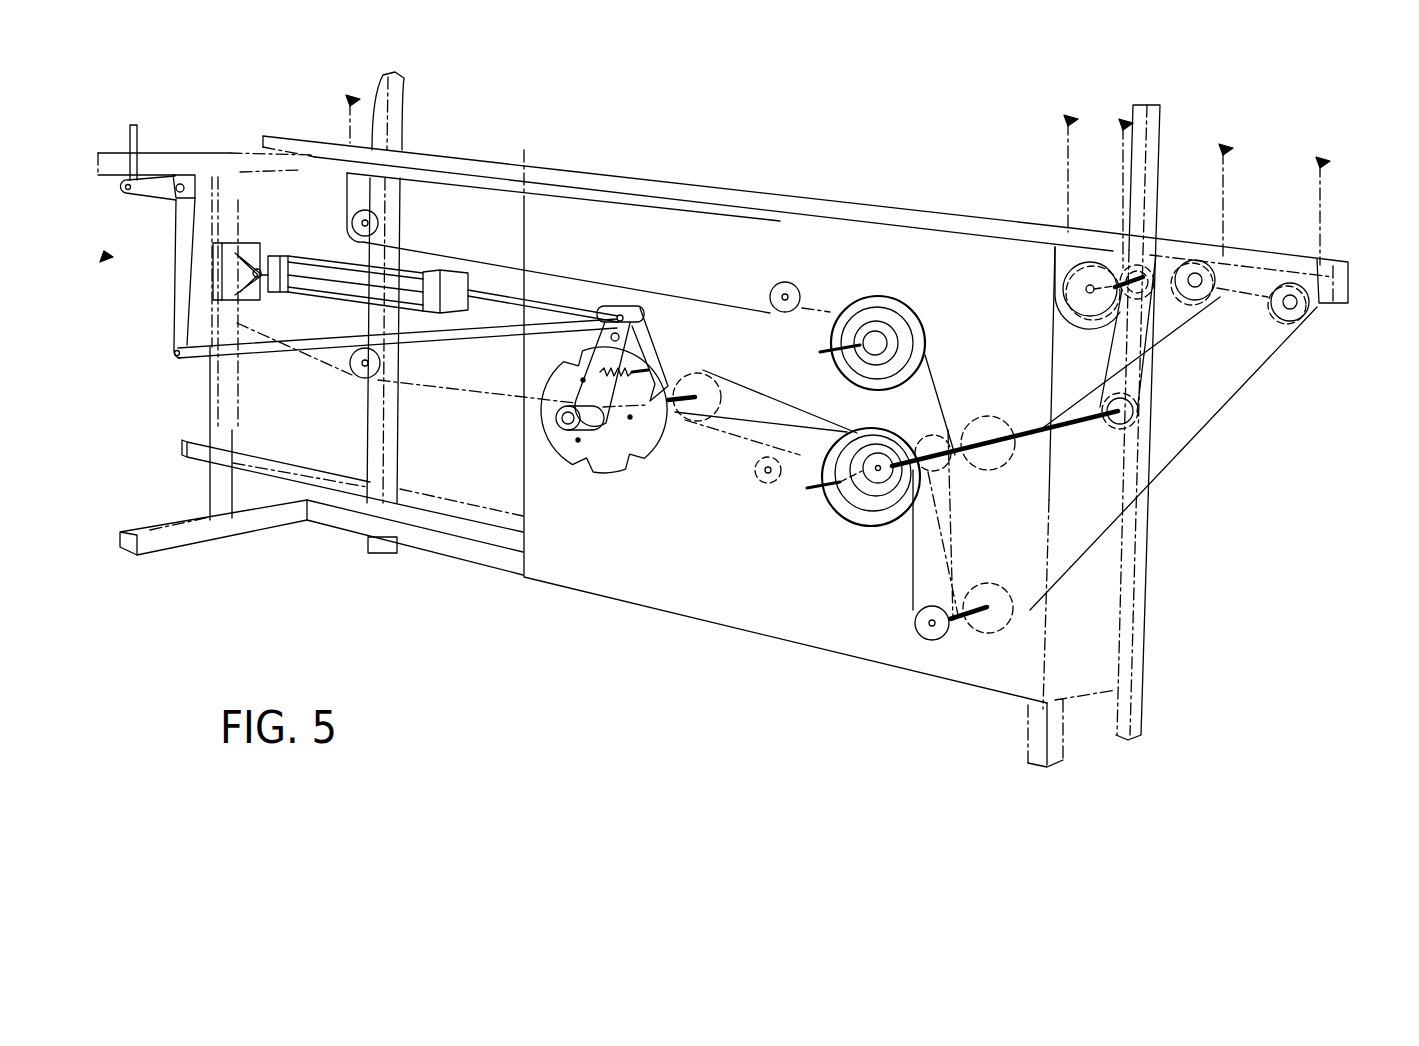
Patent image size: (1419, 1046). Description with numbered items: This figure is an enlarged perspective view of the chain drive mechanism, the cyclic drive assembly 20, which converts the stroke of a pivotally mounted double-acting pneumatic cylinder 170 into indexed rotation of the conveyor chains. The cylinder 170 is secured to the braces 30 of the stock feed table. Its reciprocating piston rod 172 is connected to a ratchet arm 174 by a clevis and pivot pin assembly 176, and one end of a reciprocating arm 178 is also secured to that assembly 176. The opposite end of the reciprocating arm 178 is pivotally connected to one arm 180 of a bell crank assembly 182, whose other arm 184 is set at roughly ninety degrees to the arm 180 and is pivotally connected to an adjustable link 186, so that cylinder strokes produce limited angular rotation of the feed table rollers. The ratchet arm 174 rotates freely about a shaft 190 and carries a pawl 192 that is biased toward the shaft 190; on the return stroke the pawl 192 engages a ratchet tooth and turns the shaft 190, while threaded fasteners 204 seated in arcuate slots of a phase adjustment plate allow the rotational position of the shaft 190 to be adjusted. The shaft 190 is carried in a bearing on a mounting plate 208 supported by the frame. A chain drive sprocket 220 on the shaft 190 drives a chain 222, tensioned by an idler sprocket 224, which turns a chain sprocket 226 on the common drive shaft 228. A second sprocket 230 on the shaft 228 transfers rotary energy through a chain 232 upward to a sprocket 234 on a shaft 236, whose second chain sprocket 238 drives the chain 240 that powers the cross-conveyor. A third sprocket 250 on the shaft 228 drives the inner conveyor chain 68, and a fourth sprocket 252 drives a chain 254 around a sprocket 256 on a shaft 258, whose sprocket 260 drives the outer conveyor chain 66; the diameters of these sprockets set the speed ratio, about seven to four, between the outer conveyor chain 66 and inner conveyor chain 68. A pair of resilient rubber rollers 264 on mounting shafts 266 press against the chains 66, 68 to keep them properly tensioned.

The cyclic drive assembly 20 is at (698, 671).
The braces 30 is at (228, 193).
The outer conveyor chain 66 is at (1100, 533).
The inner conveyor chain 68 is at (1187, 322).
The double-acting pneumatic cylinder 170 is at (337, 282).
The piston rod 172 is at (573, 308).
The ratchet arm 174 is at (593, 392).
The clevis and pivot pin assembly 176 is at (622, 306).
The reciprocating arm 178 is at (255, 352).
The arm 180 is at (183, 262).
The bell crank assembly 182 is at (154, 238).
The arm 184 is at (142, 185).
The adjustable link 186 is at (138, 142).
The shaft 190 is at (685, 413).
The pawl 192 is at (660, 358).
The threaded fastener 204 is at (578, 440).
The mounting plate 208 is at (620, 602).
The chain drive sprocket 220 is at (707, 386).
The chain 222 is at (740, 445).
The idler sprocket 224 is at (760, 483).
The chain sprocket 226 is at (860, 453).
The shaft 228 is at (968, 440).
The second sprocket 230 is at (1110, 430).
The chain 232 is at (1105, 365).
The sprocket 234 is at (1147, 270).
The shaft 236 is at (1127, 277).
The second chain sprocket 238 is at (1087, 282).
The chain 240 is at (1067, 152).
The third sprocket 250 is at (988, 430).
The fourth sprocket 252 is at (940, 463).
The chain 254 is at (910, 603).
The sprocket 256 is at (933, 633).
The shaft 258 is at (977, 618).
The sprocket 260 is at (987, 617).
The resilient rollers 264 is at (878, 518).
The mounting shafts 266 is at (822, 353).